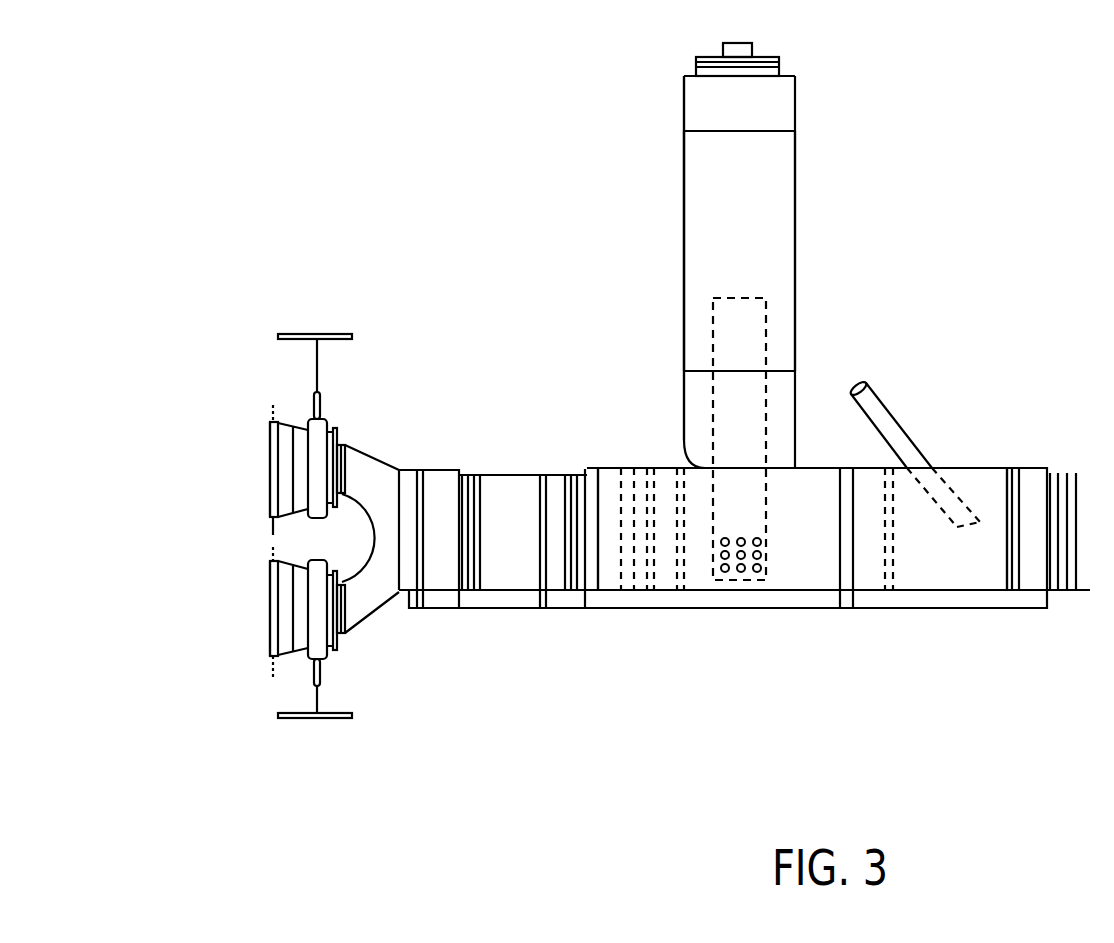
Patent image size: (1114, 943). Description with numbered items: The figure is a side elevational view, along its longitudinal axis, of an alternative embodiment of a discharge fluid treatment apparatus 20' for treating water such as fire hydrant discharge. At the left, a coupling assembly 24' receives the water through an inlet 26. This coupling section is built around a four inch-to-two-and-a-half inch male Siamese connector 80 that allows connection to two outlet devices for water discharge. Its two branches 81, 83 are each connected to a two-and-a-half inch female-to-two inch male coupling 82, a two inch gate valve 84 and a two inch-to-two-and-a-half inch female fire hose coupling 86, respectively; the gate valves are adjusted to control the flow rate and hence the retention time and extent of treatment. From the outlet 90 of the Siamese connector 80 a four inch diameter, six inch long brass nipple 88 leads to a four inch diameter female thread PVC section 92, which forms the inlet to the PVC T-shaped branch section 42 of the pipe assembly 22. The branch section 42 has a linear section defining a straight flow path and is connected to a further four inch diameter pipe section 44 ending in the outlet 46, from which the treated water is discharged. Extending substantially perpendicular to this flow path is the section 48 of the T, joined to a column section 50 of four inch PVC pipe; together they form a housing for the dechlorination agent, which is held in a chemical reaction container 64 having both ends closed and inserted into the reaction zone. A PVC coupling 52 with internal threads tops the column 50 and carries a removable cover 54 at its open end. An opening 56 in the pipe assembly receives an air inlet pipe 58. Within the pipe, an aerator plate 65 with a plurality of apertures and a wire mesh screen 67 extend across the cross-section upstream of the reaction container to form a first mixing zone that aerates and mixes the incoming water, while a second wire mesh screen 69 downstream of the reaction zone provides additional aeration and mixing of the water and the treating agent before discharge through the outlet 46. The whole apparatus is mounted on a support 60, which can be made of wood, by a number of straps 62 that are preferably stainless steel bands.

The discharge fluid treatment apparatus 20' is at (832, 258).
The pipe assembly 22 is at (1076, 590).
The coupling assembly 24' is at (428, 632).
The inlet 26 is at (267, 482).
The T-shaped branch section 42 is at (826, 541).
The pipe section 44 is at (950, 562).
The outlet 46 is at (1050, 470).
The perpendicular section 48 is at (797, 393).
The column section 50 is at (797, 192).
The coupling 52 is at (797, 115).
The removable cover 54 is at (752, 52).
The opening 56 is at (928, 467).
The air inlet pipe 58 is at (868, 393).
The support 60 is at (975, 610).
The straps 62 is at (420, 610).
The chemical reaction container 64 is at (735, 313).
The aerator plate 65 is at (627, 468).
The wire mesh screen 67 is at (650, 468).
The wire mesh screen 69 is at (893, 590).
The Siamese connector 80 is at (373, 455).
The branch 81 is at (359, 486).
The coupling 82 is at (319, 430).
The branch 83 is at (358, 596).
The gate valve 84 is at (297, 432).
The fire hose coupling 86 is at (286, 442).
The brass nipple 88 is at (516, 532).
The outlet 90 is at (460, 488).
The PVC section 92 is at (590, 470).